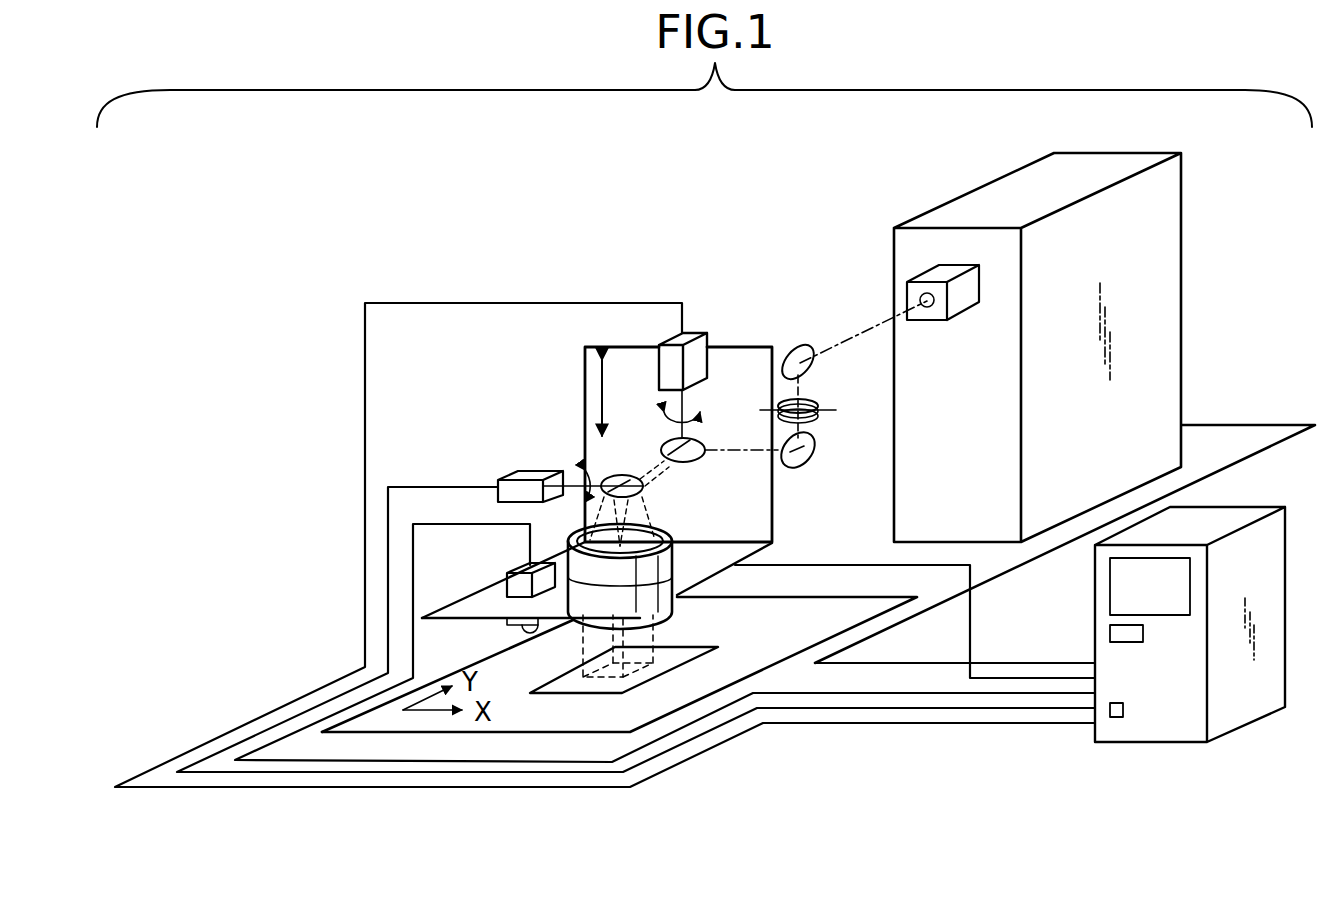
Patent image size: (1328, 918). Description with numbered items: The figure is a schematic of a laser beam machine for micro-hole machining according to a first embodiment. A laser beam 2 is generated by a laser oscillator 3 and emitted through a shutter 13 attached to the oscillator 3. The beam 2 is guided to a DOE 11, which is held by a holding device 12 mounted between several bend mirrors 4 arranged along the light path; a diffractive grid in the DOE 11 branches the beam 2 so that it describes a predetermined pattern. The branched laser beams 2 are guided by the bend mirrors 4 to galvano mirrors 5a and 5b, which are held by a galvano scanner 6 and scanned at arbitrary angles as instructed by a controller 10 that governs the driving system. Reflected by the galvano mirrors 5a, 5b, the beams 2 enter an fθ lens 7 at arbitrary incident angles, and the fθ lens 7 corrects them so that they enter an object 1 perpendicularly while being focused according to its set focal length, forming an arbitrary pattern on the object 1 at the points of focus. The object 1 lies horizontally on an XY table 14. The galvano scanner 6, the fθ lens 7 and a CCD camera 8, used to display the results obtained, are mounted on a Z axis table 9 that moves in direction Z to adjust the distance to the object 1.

The object 1 is at (614, 693).
The laser beam 2 is at (856, 331).
The laser oscillator 3 is at (1008, 190).
The bend mirrors 4 is at (799, 346).
The galvano mirror 5a is at (706, 458).
The galvano mirror 5b is at (642, 493).
The galvano scanner 6 is at (533, 472).
The fθ lens 7 is at (568, 542).
The CCD camera 8 is at (507, 588).
The Z axis table 9 is at (585, 376).
The controller 10 is at (1148, 745).
The DOE 11 is at (808, 402).
The holding device 12 is at (818, 440).
The shutter 13 is at (922, 276).
The XY table 14 is at (545, 729).